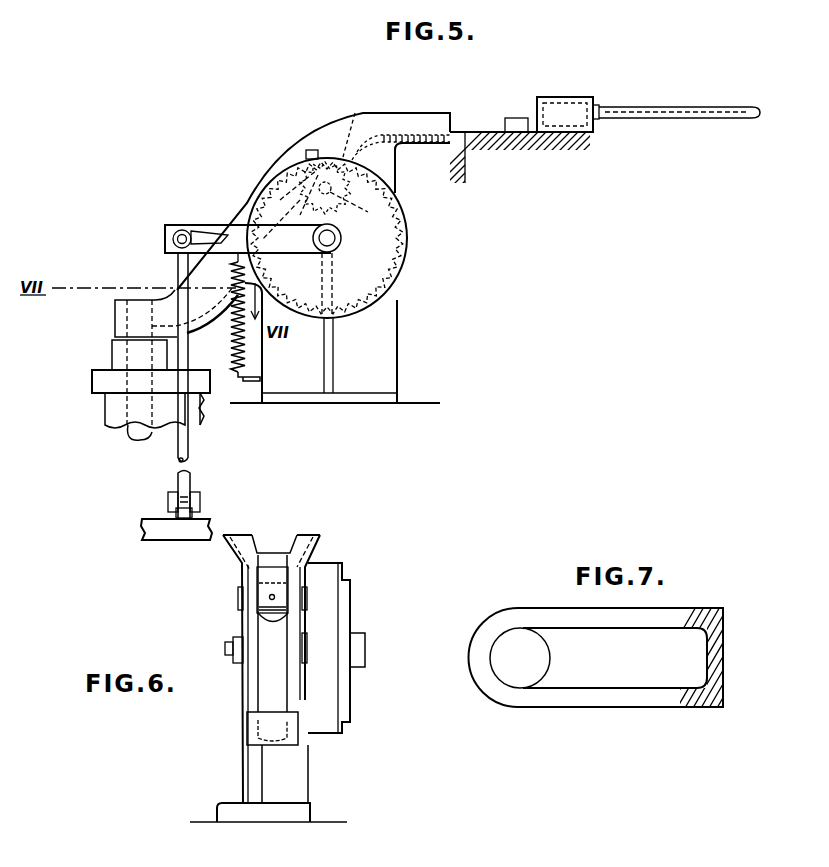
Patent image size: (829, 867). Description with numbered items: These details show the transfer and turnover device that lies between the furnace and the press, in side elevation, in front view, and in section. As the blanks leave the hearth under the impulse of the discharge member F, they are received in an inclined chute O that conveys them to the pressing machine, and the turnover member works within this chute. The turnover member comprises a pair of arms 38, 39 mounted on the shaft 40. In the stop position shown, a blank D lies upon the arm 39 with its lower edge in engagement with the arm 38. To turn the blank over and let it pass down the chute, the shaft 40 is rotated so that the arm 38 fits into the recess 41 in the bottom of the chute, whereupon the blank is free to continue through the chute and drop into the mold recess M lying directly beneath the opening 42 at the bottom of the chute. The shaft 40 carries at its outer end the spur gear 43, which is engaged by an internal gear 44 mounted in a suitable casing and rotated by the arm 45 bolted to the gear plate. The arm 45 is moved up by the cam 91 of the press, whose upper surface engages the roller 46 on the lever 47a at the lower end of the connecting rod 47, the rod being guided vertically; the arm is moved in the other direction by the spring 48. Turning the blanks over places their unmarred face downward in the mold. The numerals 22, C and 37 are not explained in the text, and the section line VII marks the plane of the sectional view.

In FIG. 5, the inclined chute O is at (317, 132).
In FIG. 6, the inclined chute O is at (270, 648).
In FIG. 5, the rack 22 is at (327, 160).
In FIG. 5, the blank D is at (515, 118).
In FIG. 5, the discharge member F is at (577, 98).
In FIG. 5, the ceiling C is at (534, 142).
In FIG. 5, the arm 39 is at (380, 168).
In FIG. 5, the internal gear 44 is at (353, 318).
In FIG. 6, the internal gear 44 is at (328, 577).
In FIG. 5, the spur gear 43 is at (318, 201).
In FIG. 5, the shaft 40 is at (330, 188).
In FIG. 5, the arm 38 is at (308, 149).
In FIG. 5, the recess 41 is at (264, 181).
In FIG. 5, the arm 45 is at (237, 237).
In FIG. 5, the spring 48 is at (233, 345).
In FIG. 5, the opening 42 is at (138, 335).
In FIG. 7, the opening 42 is at (517, 676).
In FIG. 5, the mold recess M is at (113, 355).
In FIG. 5, the connecting rod 47 is at (190, 452).
In FIG. 5, the roller 46 is at (178, 490).
In FIG. 5, the lever 47a is at (200, 500).
In FIG. 5, the cam 91 is at (176, 529).
In FIG. 7, the slot 37 is at (642, 676).